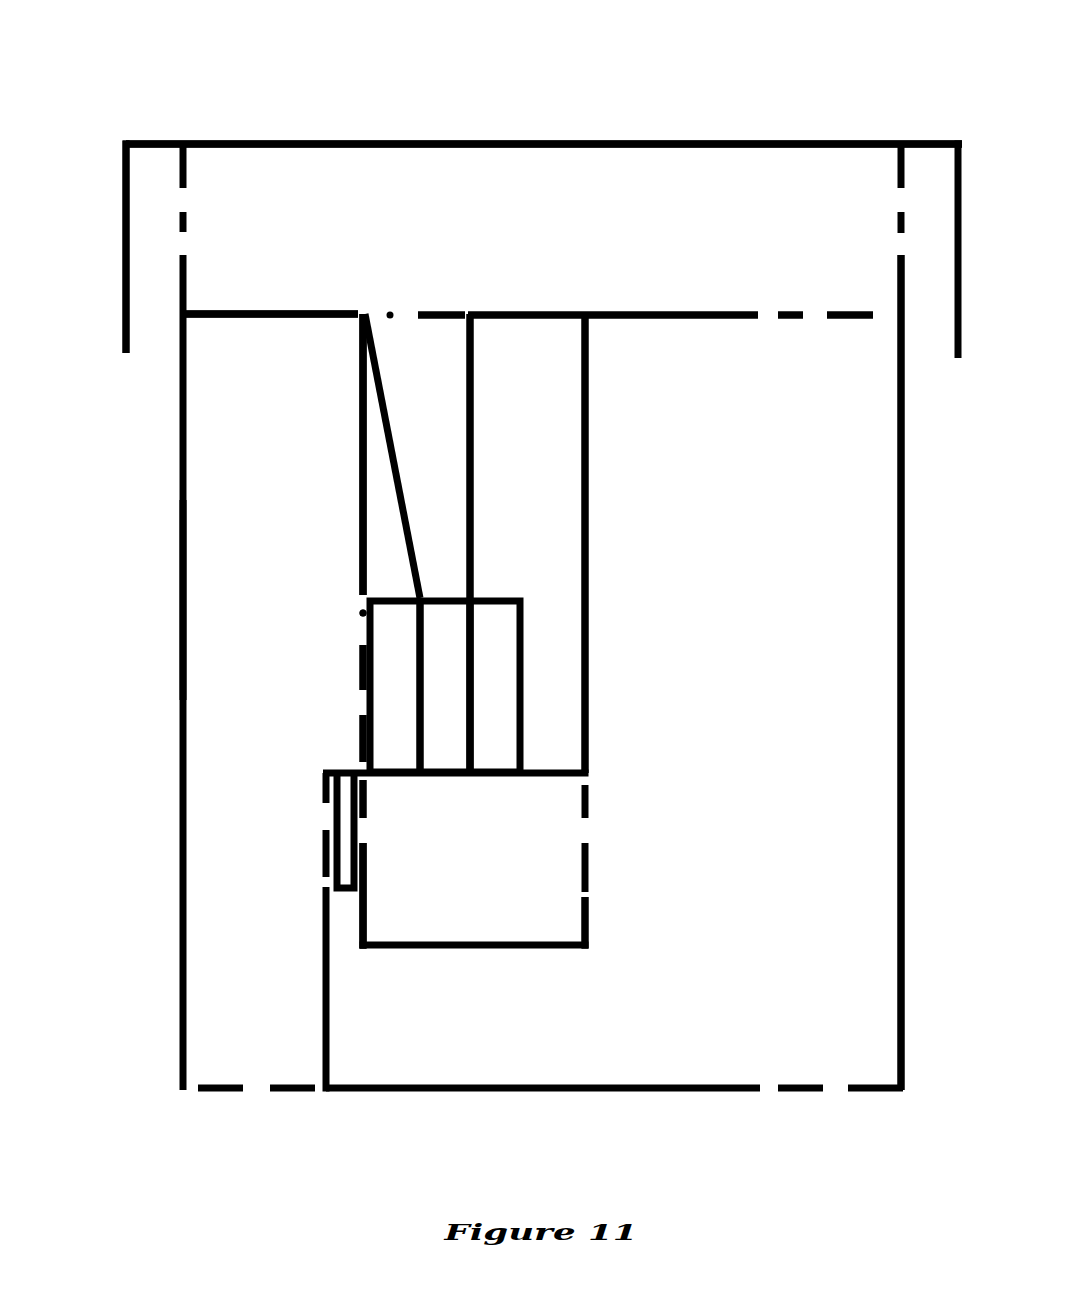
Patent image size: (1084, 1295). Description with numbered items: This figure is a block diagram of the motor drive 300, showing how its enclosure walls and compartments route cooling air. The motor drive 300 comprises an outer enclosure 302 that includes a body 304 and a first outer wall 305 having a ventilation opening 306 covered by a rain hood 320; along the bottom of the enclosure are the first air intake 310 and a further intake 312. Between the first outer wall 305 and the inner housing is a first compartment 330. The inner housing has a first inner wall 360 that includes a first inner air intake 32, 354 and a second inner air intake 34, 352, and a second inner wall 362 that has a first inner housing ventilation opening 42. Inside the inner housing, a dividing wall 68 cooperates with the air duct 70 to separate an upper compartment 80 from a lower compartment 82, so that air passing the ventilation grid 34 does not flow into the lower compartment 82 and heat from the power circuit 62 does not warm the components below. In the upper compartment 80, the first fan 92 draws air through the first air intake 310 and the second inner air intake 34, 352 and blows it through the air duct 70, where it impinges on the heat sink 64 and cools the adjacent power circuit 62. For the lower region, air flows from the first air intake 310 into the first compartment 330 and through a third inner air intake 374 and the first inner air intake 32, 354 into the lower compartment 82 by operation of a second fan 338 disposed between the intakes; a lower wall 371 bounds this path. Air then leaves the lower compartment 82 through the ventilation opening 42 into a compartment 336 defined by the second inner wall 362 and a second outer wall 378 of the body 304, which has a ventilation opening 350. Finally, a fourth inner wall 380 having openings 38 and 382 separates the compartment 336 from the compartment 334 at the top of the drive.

The motor drive 300 is at (120, 62).
The outer enclosure 302 is at (228, 120).
The body 304 is at (178, 583).
The first outer wall 305 is at (181, 652).
The ventilation opening 306 is at (181, 226).
The first air intake 310 is at (264, 1088).
The bottom opening 312 is at (808, 1090).
The rain hood 320 is at (124, 242).
The first compartment 330 is at (244, 559).
The compartment 334 is at (497, 227).
The compartment 336 is at (744, 530).
The second fan 338 is at (340, 875).
The ventilation opening 350 is at (898, 215).
The first inner wall 360 is at (358, 460).
The second inner wall 362 is at (588, 545).
The lower wall 371 is at (323, 922).
The third inner air intake 374 is at (323, 845).
The second outer wall 378 is at (903, 655).
The fourth inner wall 380 is at (627, 312).
The opening 382 is at (793, 312).
The ventilation grid 38 is at (391, 312).
The ventilation grid 34 is at (362, 637).
The second inner air intake 352 is at (362, 637).
The inner air intake 32 is at (365, 832).
The first inner air intake 354 is at (365, 832).
The ventilation opening 42 is at (590, 870).
The power circuit 62 is at (486, 680).
The heat sink 64 is at (433, 680).
The dividing wall 68 is at (552, 773).
The air duct 70 is at (472, 510).
The upper compartment 80 is at (416, 435).
The lower compartment 82 is at (476, 892).
The fan 92 is at (385, 680).